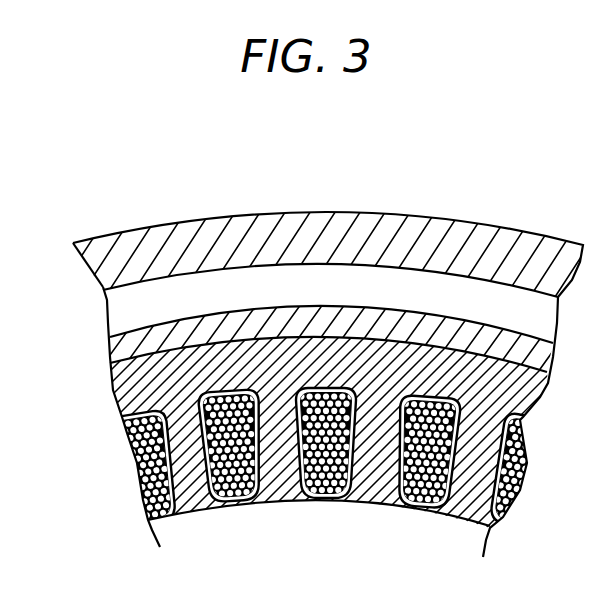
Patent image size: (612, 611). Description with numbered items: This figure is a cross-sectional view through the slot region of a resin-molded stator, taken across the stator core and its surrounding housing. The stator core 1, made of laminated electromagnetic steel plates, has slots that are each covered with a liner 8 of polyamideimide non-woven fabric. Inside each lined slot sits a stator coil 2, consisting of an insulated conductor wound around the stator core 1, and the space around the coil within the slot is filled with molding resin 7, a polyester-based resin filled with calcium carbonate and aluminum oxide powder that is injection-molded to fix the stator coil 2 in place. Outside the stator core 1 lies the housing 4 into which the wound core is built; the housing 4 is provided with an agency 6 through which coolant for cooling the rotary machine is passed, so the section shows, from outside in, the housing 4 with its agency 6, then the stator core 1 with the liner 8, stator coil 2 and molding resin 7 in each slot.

The stator core 1 is at (155, 391).
The stator coil 2 is at (133, 460).
The housing 4 is at (303, 233).
The agency 6 is at (240, 290).
The molding resin 7 is at (142, 513).
The liner 8 is at (205, 392).